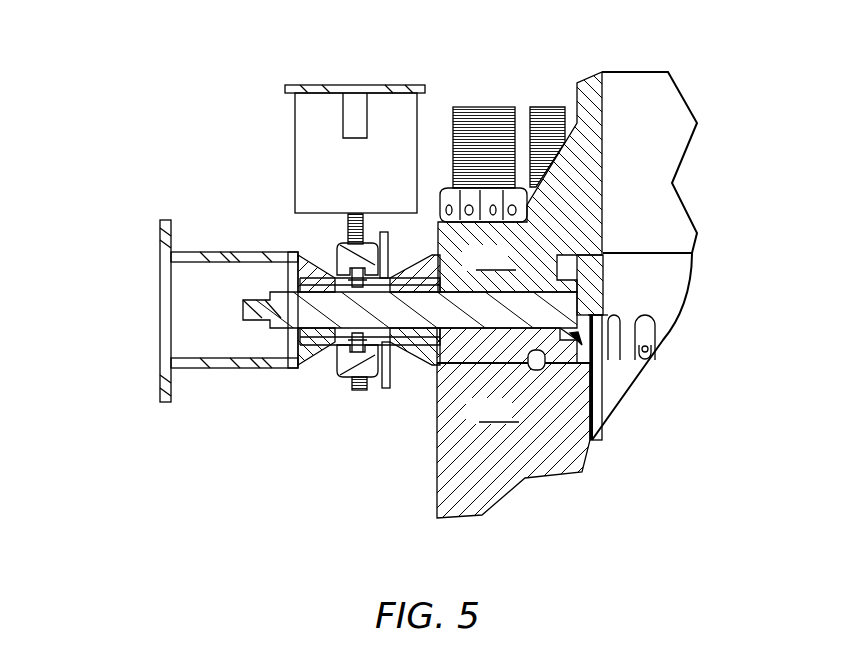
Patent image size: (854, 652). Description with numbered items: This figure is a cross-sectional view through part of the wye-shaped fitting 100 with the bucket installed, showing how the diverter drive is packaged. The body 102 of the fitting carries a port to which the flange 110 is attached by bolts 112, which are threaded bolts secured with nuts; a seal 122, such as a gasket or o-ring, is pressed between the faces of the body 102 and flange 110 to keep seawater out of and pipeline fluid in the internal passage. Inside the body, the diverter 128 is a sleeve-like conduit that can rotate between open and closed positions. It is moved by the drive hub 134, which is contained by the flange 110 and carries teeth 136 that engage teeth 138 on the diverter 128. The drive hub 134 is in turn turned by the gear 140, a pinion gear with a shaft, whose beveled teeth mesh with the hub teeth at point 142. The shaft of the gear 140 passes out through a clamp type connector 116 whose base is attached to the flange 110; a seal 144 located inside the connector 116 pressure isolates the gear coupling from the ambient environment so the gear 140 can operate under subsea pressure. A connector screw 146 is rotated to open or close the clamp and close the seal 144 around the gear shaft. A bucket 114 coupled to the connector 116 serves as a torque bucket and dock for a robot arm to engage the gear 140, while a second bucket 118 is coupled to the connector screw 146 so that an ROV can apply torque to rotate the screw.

The fitting 100 is at (243, 50).
The body 102 is at (513, 423).
The flange 110 is at (520, 182).
The bolts 112 is at (485, 107).
The bucket 114 is at (165, 263).
The connector 116 is at (376, 376).
The bucket 118 is at (295, 136).
The seal 122 is at (535, 368).
The diverter 128 is at (600, 420).
The drive hub 134 is at (597, 262).
The teeth 136 is at (628, 325).
The teeth 138 is at (648, 342).
The gear 140 is at (282, 330).
The point 142 is at (580, 340).
The seal 144 is at (358, 340).
The connector screw 146 is at (350, 228).